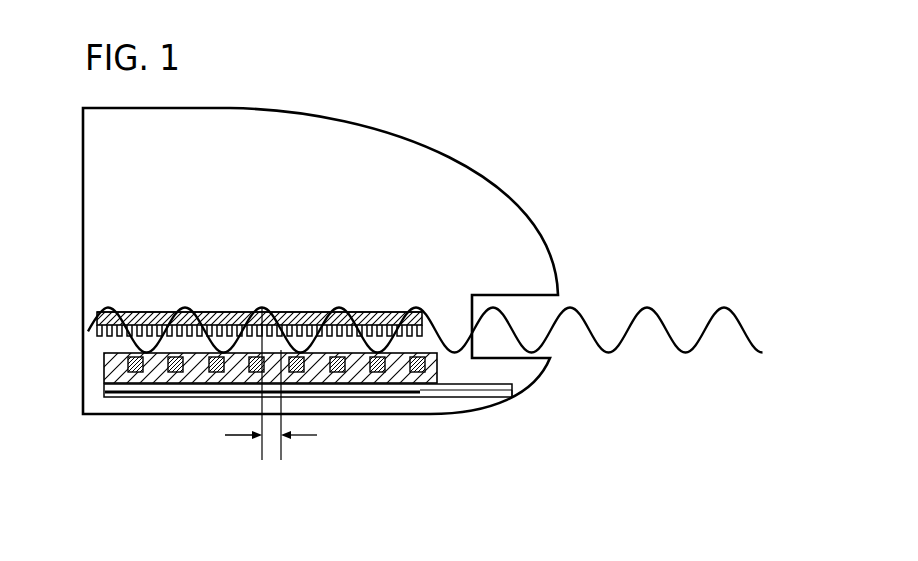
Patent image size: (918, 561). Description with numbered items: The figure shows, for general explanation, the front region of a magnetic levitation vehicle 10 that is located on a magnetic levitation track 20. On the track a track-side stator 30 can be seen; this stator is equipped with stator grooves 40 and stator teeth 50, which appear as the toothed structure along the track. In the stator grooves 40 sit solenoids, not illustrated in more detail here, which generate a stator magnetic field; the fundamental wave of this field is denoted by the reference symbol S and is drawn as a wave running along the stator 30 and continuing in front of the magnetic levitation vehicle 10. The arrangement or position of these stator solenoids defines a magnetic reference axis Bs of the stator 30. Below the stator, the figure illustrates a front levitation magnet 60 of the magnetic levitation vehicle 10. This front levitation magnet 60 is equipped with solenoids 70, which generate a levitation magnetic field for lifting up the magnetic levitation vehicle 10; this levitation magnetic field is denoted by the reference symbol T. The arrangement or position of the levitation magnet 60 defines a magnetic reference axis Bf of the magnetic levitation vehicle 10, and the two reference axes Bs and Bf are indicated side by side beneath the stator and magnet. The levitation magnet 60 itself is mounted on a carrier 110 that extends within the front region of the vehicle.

The magnetic levitation vehicle 10 is at (521, 200).
The fundamental wave of the stator magnetic field S is at (183, 308).
The magnetic levitation track 20 is at (381, 312).
The track-side stator 30 is at (305, 312).
The stator teeth 50 is at (98, 332).
The stator grooves 40 is at (107, 344).
The solenoids 70 is at (137, 375).
The front levitation magnet 60 is at (107, 378).
The carrier 110 is at (512, 390).
The levitation magnetic field T is at (196, 375).
The magnetic reference axis of the stator Bs is at (262, 447).
The magnetic reference axis of the magnetic levitation vehicle Bf is at (283, 447).